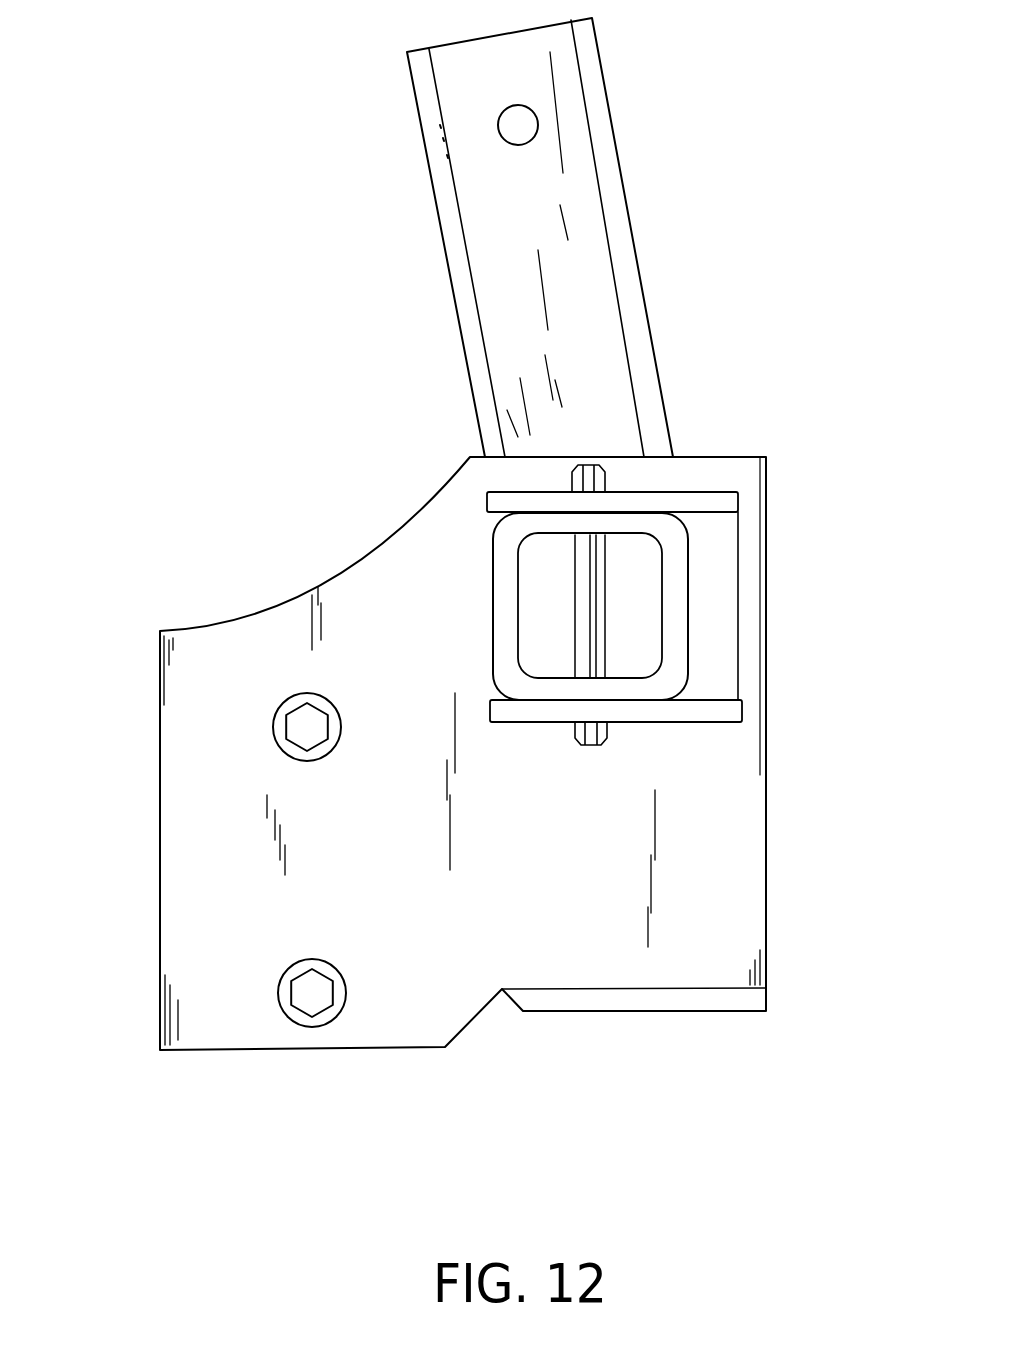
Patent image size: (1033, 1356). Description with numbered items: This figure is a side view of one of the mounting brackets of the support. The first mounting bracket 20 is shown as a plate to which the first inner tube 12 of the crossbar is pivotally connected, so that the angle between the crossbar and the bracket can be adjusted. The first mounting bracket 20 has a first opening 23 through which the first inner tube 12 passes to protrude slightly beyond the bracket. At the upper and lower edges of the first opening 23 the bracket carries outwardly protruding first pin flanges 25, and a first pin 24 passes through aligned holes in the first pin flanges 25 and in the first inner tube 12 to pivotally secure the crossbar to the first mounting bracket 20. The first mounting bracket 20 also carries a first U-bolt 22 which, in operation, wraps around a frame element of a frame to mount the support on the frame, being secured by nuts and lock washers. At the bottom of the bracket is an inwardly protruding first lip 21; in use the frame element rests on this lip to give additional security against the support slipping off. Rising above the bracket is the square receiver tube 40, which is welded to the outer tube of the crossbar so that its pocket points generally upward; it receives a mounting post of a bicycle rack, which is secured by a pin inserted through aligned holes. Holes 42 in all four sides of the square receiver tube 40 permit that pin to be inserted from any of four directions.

The first inner tube 12 is at (675, 655).
The first mounting bracket 20 is at (747, 860).
The first lip 21 is at (648, 1002).
The first U-bolt 22 is at (305, 993).
The first opening 23 is at (713, 595).
The first pin 24 is at (590, 472).
The first pin flanges 25 is at (713, 499).
The square receiver tube 40 is at (613, 205).
The holes 42 is at (520, 125).